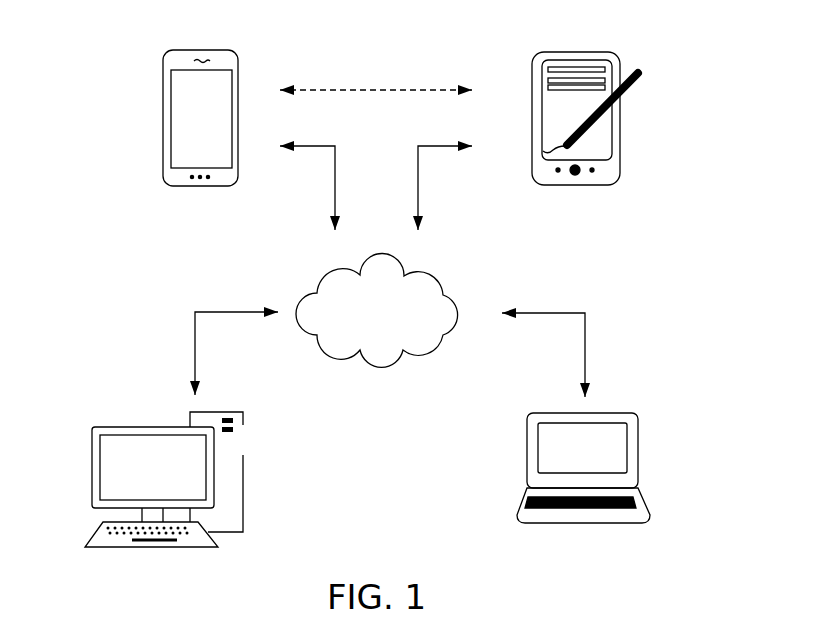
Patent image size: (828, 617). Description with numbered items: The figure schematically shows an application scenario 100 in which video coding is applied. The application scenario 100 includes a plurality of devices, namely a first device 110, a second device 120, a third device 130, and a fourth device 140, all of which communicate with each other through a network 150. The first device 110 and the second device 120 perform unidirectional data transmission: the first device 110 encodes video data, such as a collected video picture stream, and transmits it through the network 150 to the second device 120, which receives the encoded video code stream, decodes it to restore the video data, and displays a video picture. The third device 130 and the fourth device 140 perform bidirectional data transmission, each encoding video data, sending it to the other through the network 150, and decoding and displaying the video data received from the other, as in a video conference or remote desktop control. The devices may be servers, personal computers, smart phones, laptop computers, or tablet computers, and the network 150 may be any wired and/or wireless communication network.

The application scenario 100 is at (167, 257).
The first device 110 is at (623, 407).
The second device 120 is at (248, 528).
The third device 130 is at (235, 73).
The fourth device 140 is at (633, 168).
The network 150 is at (447, 357).